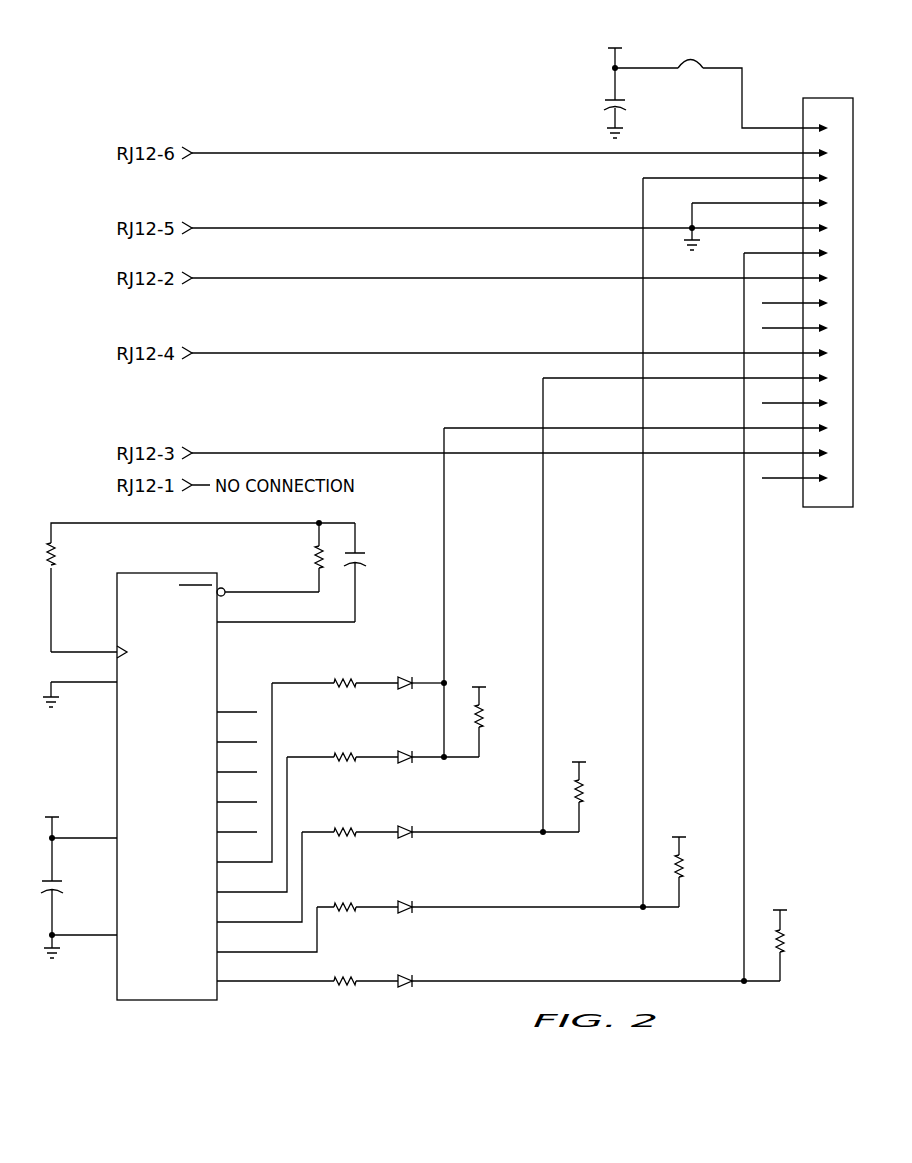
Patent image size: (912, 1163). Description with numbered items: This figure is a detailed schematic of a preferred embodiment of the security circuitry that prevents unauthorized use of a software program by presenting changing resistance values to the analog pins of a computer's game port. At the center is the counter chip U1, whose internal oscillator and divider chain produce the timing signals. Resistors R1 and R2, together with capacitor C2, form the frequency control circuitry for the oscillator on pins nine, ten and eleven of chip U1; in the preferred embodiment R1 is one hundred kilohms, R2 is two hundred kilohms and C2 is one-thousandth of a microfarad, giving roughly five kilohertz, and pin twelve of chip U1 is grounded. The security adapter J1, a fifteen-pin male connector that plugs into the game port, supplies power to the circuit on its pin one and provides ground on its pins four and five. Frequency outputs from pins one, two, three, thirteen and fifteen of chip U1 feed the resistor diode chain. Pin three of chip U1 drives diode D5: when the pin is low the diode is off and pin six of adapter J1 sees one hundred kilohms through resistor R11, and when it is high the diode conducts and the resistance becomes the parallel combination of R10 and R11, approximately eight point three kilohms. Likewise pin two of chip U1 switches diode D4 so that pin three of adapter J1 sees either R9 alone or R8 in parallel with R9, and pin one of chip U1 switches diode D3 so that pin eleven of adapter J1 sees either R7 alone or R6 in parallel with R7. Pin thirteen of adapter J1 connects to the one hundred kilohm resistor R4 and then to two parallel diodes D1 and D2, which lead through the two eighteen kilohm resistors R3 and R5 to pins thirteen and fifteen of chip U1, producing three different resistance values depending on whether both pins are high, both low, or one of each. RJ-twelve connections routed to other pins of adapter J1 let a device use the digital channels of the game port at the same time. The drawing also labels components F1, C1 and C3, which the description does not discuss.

The counter chip U1 is at (203, 790).
The security adapter J1 is at (526, 305).
The 0 ohm fuse F1 is at (708, 78).
The 10UF capacitor C1 is at (599, 103).
The capacitor C2 is at (375, 572).
The 0.1 capacitor C3 is at (65, 877).
The resistor R1 is at (293, 556).
The resistor R2 is at (201, 587).
The resistor R3 is at (342, 757).
The resistor R4 is at (498, 711).
The resistor R5 is at (335, 683).
The resistor R6 is at (350, 832).
The resistor R7 is at (598, 786).
The resistor R8 is at (357, 907).
The resistor R9 is at (698, 861).
The resistor R10 is at (361, 981).
The resistor R11 is at (799, 934).
The diode D1 is at (429, 757).
The diode D2 is at (413, 683).
The diode D3 is at (479, 832).
The diode D4 is at (529, 907).
The diode D5 is at (579, 981).